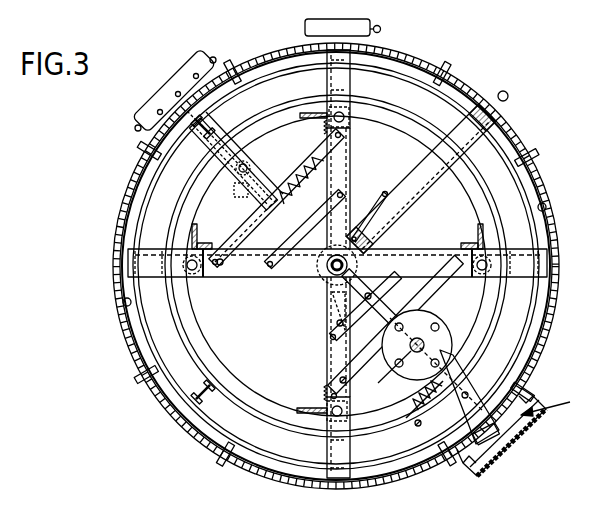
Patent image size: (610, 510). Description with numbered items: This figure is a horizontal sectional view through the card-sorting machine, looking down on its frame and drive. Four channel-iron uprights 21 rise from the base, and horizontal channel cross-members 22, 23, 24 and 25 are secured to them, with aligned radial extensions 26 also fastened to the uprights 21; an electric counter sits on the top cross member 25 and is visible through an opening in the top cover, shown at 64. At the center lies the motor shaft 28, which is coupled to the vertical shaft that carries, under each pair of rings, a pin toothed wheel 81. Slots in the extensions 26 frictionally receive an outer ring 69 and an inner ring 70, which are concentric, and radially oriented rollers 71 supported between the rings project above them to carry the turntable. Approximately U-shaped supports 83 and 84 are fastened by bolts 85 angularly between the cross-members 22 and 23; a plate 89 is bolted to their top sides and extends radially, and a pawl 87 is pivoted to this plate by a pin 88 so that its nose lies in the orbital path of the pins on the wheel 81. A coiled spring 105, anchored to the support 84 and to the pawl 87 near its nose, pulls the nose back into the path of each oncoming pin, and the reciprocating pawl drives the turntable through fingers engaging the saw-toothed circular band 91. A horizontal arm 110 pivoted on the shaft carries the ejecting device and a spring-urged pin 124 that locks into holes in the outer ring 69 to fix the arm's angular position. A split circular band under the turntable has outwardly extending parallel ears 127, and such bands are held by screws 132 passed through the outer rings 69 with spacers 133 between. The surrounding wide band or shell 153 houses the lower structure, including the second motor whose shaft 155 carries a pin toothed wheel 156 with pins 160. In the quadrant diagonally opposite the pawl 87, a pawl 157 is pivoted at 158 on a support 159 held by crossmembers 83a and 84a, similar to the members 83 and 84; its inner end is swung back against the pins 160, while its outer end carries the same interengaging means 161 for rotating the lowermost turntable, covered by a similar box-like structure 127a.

The uprights 21 is at (311, 112).
The cross-member 22 is at (241, 278).
The cross-member 23 is at (351, 150).
The cross-member 24 is at (323, 361).
The top cross member 25 is at (429, 249).
The radial extensions 26 is at (352, 81).
The motor shaft 28 is at (330, 268).
The opening in top cover 64 is at (311, 20).
The outer ring 69 is at (150, 324).
The inner ring 70 is at (192, 348).
The rollers 71 is at (205, 141).
The pin toothed wheel 81 is at (323, 298).
The U-shaped support 83 is at (247, 222).
The crossmember 83a is at (368, 362).
The U-shaped support 84 is at (290, 256).
The crossmember 84a is at (363, 318).
The bolts 85 is at (350, 193).
The pawl 87 is at (234, 191).
The pin 88 is at (247, 162).
The plate 89 is at (266, 168).
The circular band 91 is at (123, 302).
The coiled spring 105 is at (293, 175).
The horizontal arm 110 is at (415, 167).
The pin 124 is at (507, 92).
The ears 127 is at (162, 83).
The box-like structure 127a is at (532, 433).
The screws 132 is at (140, 380).
The spacers 133 is at (447, 63).
The circumferential band 153 is at (548, 176).
The motor shaft 155 is at (422, 338).
The pin toothed wheel 156 is at (451, 336).
The pawl 157 is at (441, 438).
The pivot 158 is at (512, 369).
The support 159 is at (383, 299).
The pins 160 is at (401, 378).
The interengaging means 161 is at (564, 399).